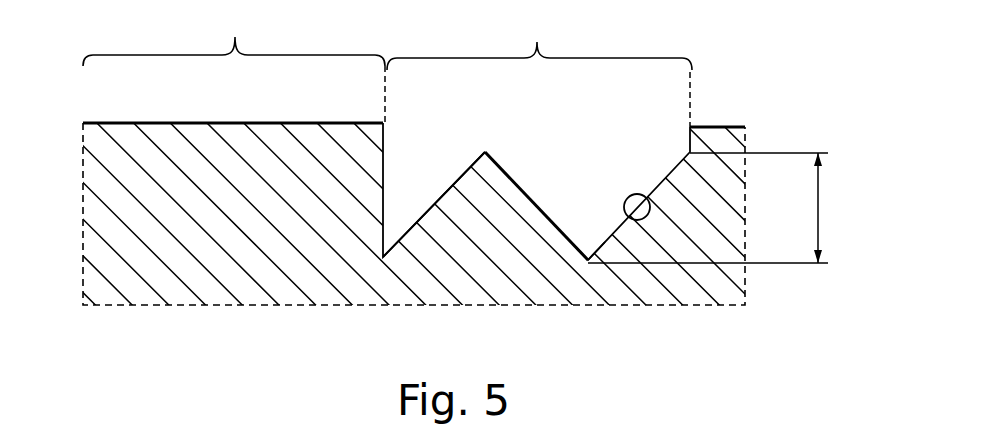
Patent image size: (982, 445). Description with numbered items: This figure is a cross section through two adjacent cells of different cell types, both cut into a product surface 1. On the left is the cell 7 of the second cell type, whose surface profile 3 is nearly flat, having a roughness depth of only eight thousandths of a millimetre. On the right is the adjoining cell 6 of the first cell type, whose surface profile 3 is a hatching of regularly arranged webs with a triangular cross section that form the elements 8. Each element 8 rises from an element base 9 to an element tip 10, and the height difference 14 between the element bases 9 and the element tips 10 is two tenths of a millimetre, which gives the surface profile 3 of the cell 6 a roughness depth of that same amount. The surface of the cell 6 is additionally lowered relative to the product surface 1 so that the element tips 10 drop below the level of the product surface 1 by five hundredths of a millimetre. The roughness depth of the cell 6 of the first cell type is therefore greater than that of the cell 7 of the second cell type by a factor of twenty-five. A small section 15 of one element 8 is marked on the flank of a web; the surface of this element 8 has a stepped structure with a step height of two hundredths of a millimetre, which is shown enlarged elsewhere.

The product surface 1 is at (714, 96).
The surface profile 3 is at (207, 123).
The cell 6 is at (539, 71).
The cell 7 is at (234, 68).
The element 8 is at (488, 245).
The element base 9 is at (588, 262).
The element tip 10 is at (485, 151).
The height difference 14 is at (721, 208).
The section 15 is at (650, 196).